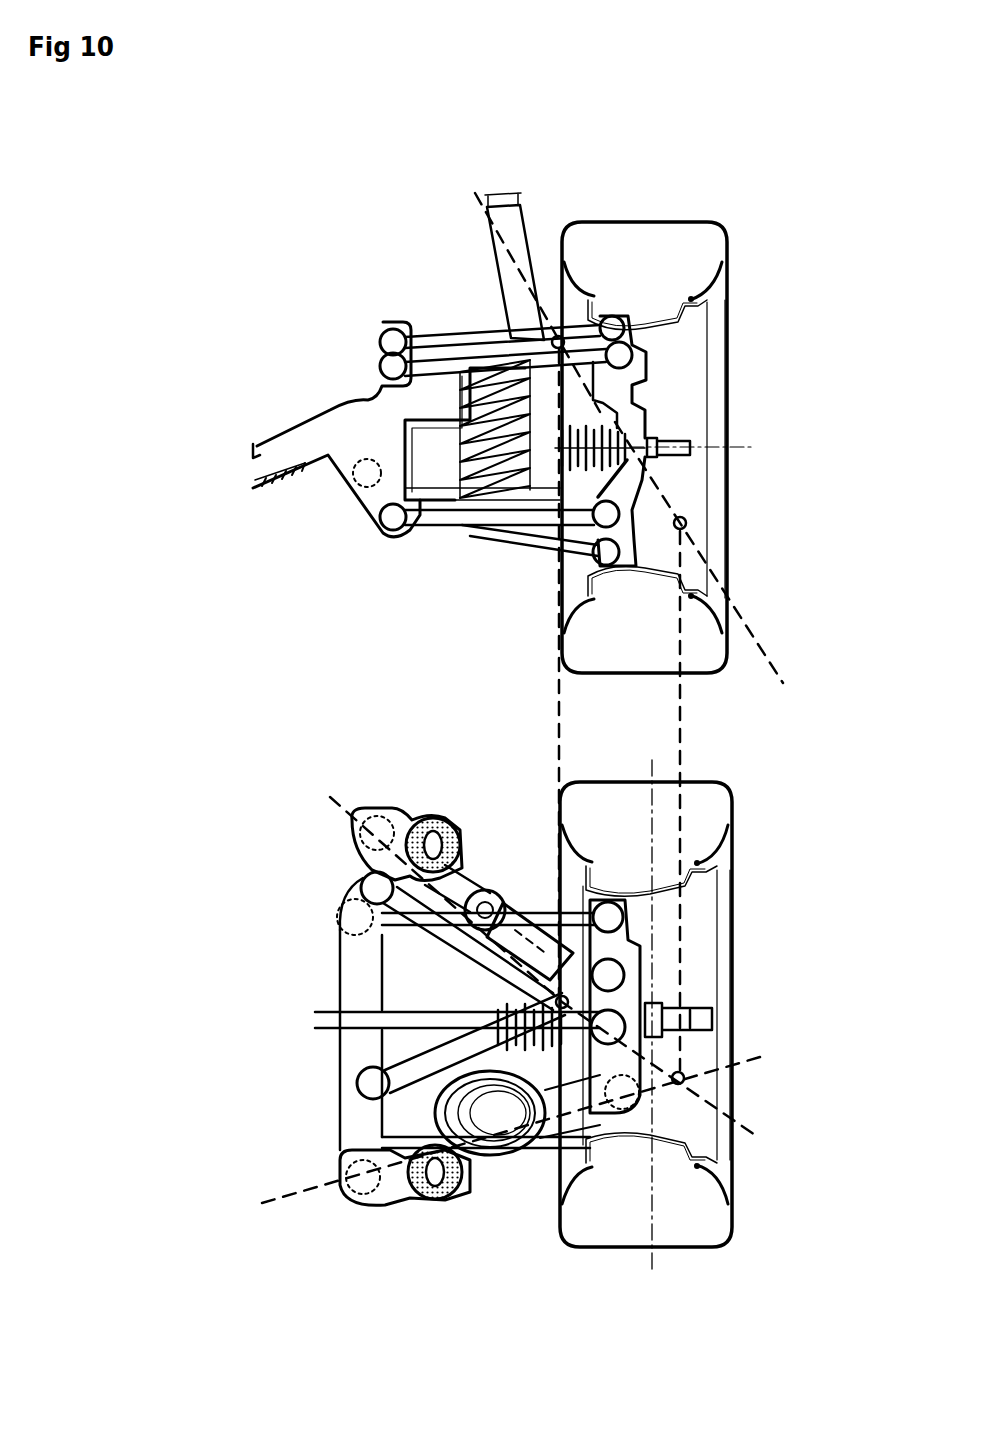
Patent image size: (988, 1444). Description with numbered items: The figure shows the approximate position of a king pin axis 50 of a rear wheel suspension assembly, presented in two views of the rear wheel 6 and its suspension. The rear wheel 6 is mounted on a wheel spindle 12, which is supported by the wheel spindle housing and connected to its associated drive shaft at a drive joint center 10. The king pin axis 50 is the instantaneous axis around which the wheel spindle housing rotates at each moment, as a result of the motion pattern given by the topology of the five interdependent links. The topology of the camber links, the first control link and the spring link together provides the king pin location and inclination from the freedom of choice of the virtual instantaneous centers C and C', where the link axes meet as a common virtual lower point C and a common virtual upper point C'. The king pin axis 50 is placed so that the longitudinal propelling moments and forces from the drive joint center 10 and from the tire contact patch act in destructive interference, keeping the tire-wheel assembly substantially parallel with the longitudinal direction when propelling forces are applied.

The rear wheel 6 is at (708, 220).
The drive joint center 10 is at (633, 432).
The wheel spindle 12 is at (714, 1015).
The king pin axis 50 is at (655, 498).
The virtual lower point C is at (749, 805).
The virtual upper point C' is at (695, 658).